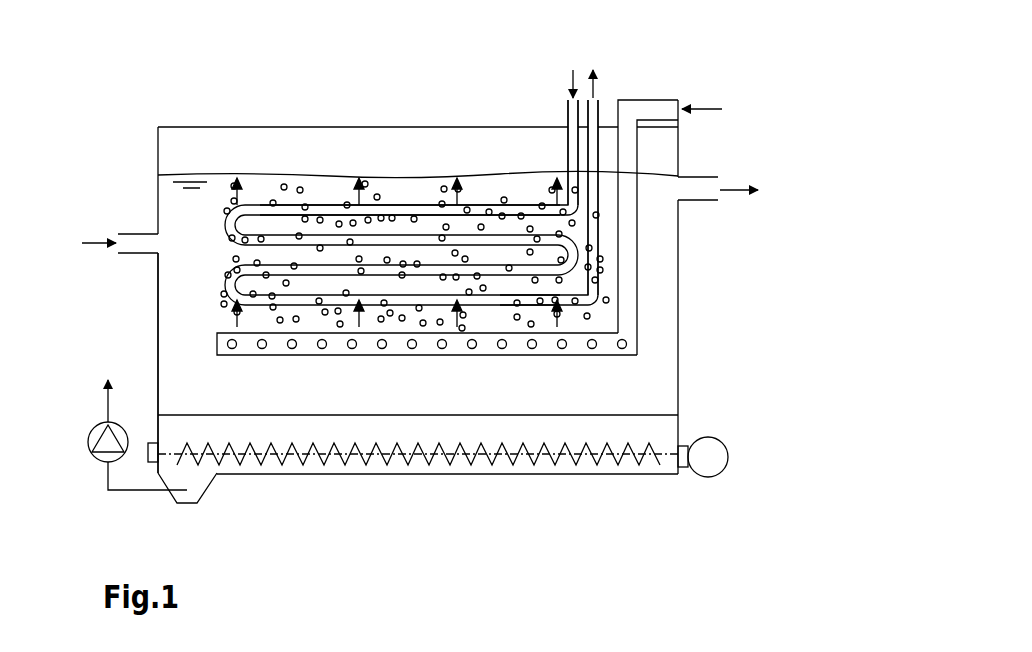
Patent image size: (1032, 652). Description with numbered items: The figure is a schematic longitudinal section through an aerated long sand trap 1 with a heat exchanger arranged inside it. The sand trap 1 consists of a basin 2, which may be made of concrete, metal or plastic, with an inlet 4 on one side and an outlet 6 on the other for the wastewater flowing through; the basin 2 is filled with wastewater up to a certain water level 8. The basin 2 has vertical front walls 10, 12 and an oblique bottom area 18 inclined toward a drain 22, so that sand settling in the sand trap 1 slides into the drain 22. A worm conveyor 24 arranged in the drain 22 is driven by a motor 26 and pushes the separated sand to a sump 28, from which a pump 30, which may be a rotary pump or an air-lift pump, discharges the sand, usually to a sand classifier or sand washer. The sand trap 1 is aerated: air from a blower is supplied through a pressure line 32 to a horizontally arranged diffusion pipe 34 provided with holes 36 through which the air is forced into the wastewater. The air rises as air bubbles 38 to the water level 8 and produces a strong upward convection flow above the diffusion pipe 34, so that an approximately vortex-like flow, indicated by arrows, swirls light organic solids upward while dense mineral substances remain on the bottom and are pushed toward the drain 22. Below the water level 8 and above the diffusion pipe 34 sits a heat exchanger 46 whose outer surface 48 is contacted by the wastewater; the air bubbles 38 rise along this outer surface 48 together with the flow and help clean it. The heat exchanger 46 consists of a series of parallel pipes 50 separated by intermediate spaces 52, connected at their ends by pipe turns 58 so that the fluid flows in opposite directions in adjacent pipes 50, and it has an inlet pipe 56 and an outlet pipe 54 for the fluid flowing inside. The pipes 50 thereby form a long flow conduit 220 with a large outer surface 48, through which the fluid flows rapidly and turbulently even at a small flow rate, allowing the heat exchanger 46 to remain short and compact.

The sand trap 1 is at (182, 108).
The basin 2 is at (678, 278).
The inlet 4 is at (137, 228).
The outlet 6 is at (705, 177).
The water level 8 is at (244, 173).
The front wall 10 is at (157, 277).
The front wall 12 is at (192, 138).
The bottom area 18 is at (668, 430).
The drain 22 is at (532, 476).
The worm conveyor 24 is at (378, 462).
The motor 26 is at (720, 440).
The sump 28 is at (203, 486).
The pump 30 is at (96, 428).
The pressure line 32 is at (653, 98).
The diffusion pipe 34 is at (217, 346).
The holes 36 is at (413, 349).
The air bubbles 38 is at (300, 322).
The heat exchanger 46 is at (292, 207).
The outer surface 48 is at (335, 207).
The pipes 50 is at (482, 208).
The intermediate spaces 52 is at (400, 225).
The outlet pipe 54 is at (600, 110).
The inlet pipe 56 is at (568, 110).
The pipe turns 58 is at (222, 226).
The flow conduit 220 is at (441, 207).